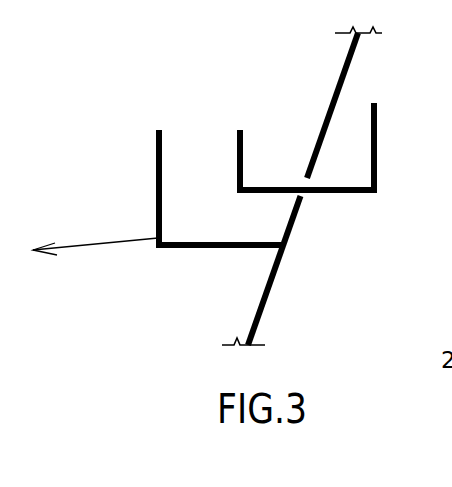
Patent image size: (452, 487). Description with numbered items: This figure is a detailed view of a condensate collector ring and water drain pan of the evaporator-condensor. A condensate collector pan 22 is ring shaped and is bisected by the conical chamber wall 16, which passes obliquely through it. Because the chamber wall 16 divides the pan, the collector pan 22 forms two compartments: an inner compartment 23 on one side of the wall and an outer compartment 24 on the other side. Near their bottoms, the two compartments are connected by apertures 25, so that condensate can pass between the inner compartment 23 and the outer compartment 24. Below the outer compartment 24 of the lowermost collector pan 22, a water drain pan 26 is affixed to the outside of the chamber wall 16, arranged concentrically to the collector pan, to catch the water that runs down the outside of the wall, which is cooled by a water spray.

The conical chamber wall 16 is at (253, 307).
The condensate collector pan 22 is at (355, 193).
The inner compartment 23 is at (348, 149).
The outer compartment 24 is at (263, 165).
The aperture 25 is at (293, 178).
The water drain pan 26 is at (182, 250).